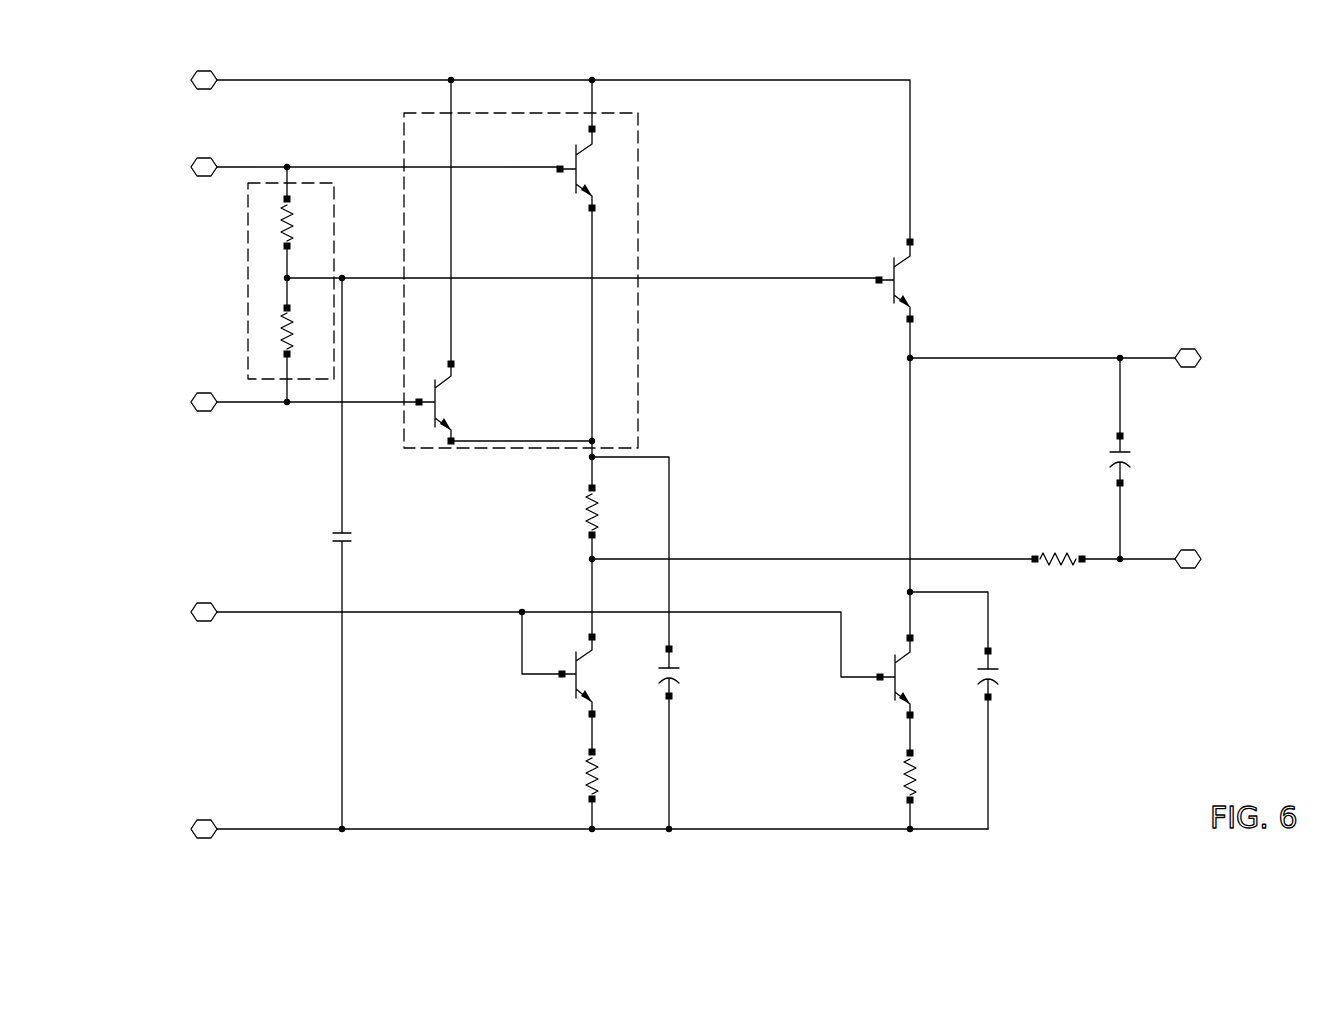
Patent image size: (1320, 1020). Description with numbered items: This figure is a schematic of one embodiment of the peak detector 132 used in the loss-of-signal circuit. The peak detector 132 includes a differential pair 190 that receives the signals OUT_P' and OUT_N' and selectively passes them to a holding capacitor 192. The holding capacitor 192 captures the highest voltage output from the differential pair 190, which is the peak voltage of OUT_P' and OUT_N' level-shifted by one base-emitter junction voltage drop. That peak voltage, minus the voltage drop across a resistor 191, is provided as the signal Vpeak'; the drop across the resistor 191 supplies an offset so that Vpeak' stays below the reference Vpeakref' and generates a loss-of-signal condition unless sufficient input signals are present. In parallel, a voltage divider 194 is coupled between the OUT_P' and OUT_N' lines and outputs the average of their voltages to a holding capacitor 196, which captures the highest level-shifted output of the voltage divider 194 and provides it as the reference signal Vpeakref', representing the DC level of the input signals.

The peak detector 132 is at (220, 44).
The differential pair 190 is at (638, 165).
The resistor 191 is at (568, 519).
The holding capacitor 192 is at (692, 690).
The voltage divider 194 is at (248, 258).
The holding capacitor 196 is at (1012, 692).